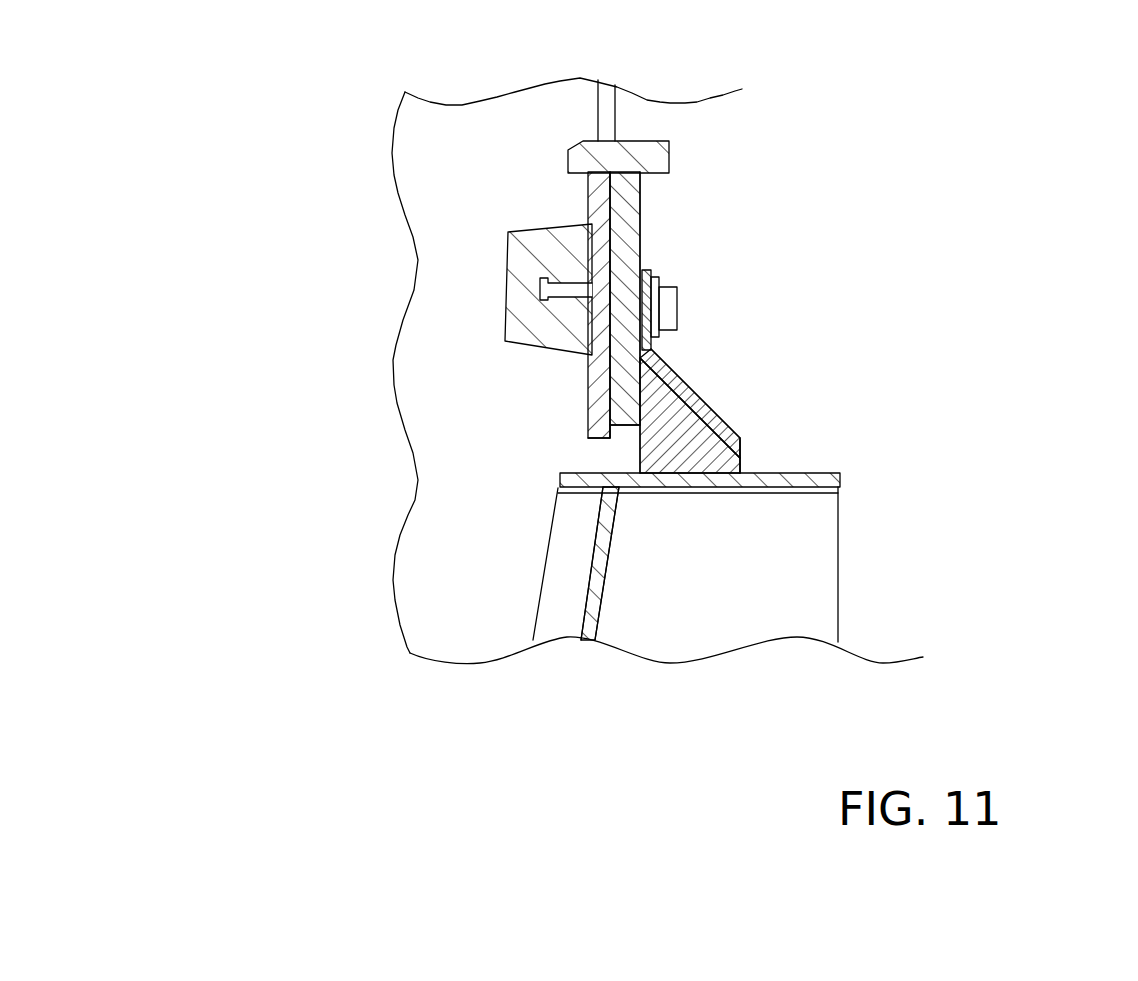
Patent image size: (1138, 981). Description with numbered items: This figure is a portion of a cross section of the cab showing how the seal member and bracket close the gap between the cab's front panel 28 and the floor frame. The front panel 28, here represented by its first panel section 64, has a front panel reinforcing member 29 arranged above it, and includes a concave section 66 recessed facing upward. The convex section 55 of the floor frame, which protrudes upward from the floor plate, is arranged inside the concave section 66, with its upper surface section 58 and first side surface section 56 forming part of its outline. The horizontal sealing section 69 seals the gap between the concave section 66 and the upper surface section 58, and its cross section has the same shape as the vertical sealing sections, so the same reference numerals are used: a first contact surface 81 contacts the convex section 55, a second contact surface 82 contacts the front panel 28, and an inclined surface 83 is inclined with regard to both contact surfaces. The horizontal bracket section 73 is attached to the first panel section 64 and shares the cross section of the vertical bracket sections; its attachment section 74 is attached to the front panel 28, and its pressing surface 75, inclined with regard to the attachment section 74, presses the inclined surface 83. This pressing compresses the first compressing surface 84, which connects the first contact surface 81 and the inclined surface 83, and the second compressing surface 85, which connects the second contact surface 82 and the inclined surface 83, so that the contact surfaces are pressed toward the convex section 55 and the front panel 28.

The front panel reinforcing member 29 is at (669, 153).
The front panel 28 is at (405, 289).
The first panel section 64 is at (592, 282).
The second compressing surface 85 is at (638, 347).
The second contact surface 82 is at (618, 392).
The concave section 66 is at (619, 437).
The horizontal bracket section 73 is at (837, 317).
The attachment section 74 is at (662, 307).
The pressing surface 75 is at (651, 362).
The inclined surface 83 is at (714, 410).
The first compressing surface 84 is at (752, 462).
The upper surface section 58 is at (787, 472).
The convex section 55 is at (779, 589).
The first side surface section 56 is at (817, 590).
The first contact surface 81 is at (656, 488).
The horizontal sealing section 69 is at (689, 453).